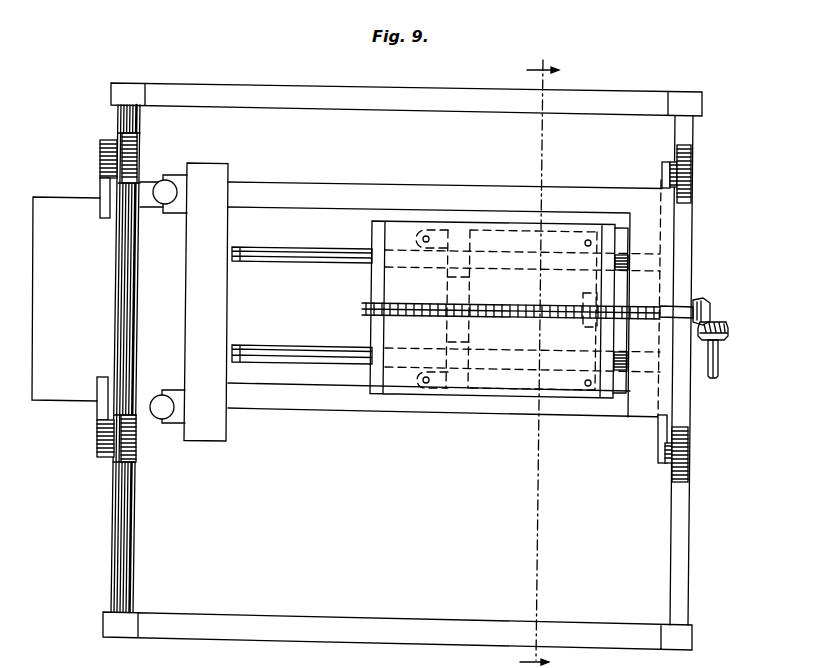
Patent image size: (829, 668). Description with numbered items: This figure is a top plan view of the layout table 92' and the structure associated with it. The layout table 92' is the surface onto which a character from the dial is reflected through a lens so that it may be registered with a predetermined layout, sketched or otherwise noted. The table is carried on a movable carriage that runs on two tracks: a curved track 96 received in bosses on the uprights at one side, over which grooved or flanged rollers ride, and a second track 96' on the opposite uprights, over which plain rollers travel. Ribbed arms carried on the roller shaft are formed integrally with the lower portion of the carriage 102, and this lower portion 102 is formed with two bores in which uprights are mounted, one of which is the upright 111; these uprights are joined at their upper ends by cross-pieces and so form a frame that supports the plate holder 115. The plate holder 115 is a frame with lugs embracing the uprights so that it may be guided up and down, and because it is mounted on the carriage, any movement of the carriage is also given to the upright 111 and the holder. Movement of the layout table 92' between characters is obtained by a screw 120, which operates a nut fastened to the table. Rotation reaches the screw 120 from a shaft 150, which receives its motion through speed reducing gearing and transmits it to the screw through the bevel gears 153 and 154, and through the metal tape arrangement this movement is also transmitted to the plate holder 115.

The layout table 92' is at (515, 332).
The curved track 96 is at (139, 358).
The track 96' is at (695, 370).
The lower portion of the carriage 102 is at (66, 299).
The upright 111 is at (158, 415).
The plate holder 115 is at (190, 302).
The screw 120 is at (371, 310).
The shaft 150 is at (719, 372).
The bevel gear 153 is at (729, 329).
The bevel gear 154 is at (709, 303).